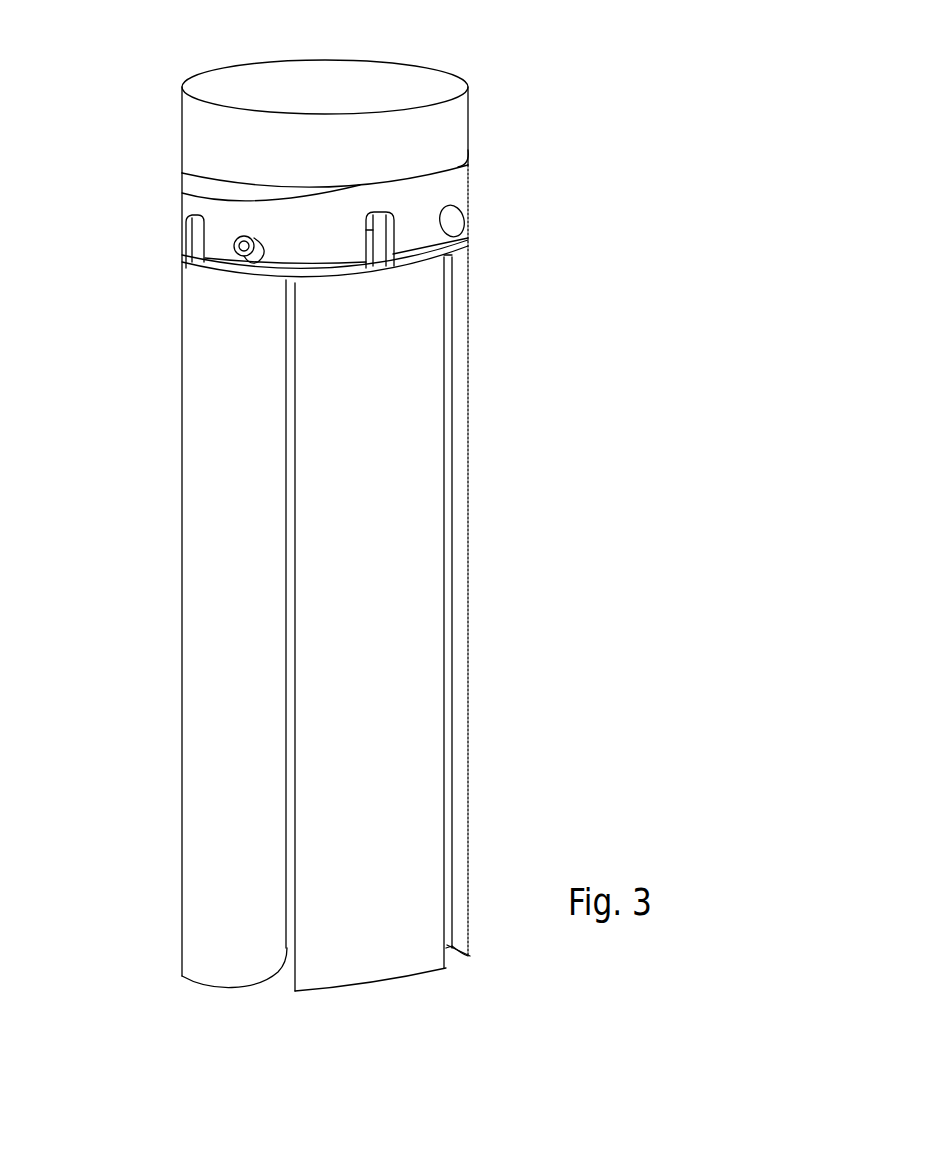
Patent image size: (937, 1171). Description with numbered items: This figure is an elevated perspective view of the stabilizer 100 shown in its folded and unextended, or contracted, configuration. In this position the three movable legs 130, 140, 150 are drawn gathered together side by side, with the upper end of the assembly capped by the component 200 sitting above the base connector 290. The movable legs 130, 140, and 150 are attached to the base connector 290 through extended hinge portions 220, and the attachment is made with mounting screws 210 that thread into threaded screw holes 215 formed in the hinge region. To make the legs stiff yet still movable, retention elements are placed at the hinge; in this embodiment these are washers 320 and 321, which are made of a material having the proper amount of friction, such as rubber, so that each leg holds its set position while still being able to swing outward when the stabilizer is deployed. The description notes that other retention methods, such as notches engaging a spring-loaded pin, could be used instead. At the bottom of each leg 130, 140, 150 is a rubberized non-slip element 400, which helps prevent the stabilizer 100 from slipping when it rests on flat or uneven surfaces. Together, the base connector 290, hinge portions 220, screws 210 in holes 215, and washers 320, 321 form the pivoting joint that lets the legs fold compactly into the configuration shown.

The stabilizer 100 is at (568, 275).
The movable leg 130 is at (243, 642).
The movable leg 140 is at (393, 533).
The movable leg 150 is at (457, 404).
The cap 200 is at (433, 78).
The mounting screw 210 is at (243, 246).
The threaded screw hole 215 is at (263, 248).
The extended hinge portion 220 is at (378, 248).
The base connector 290 is at (212, 192).
The washer 320 is at (388, 248).
The washer 321 is at (366, 232).
The rubberized non-slip element 400 is at (452, 937).